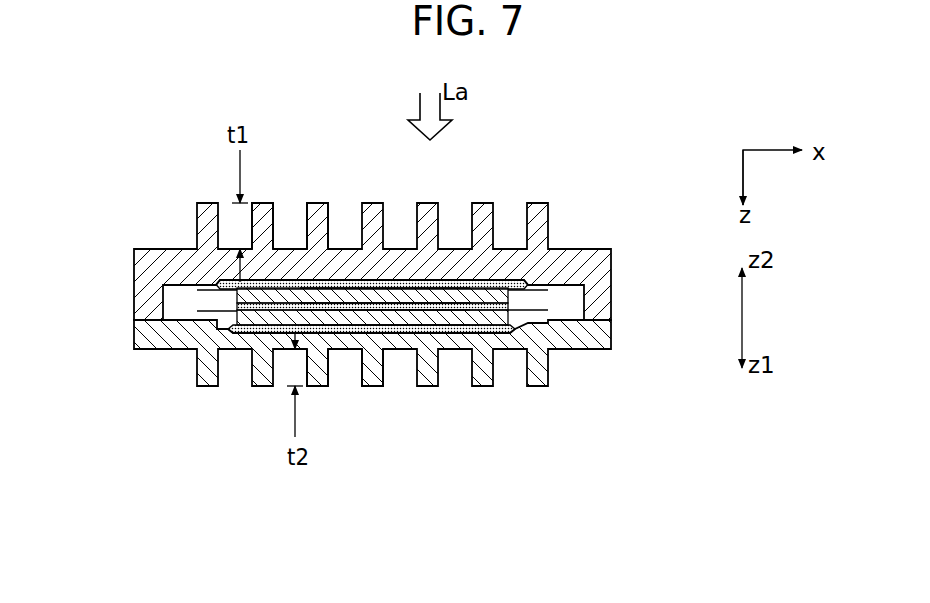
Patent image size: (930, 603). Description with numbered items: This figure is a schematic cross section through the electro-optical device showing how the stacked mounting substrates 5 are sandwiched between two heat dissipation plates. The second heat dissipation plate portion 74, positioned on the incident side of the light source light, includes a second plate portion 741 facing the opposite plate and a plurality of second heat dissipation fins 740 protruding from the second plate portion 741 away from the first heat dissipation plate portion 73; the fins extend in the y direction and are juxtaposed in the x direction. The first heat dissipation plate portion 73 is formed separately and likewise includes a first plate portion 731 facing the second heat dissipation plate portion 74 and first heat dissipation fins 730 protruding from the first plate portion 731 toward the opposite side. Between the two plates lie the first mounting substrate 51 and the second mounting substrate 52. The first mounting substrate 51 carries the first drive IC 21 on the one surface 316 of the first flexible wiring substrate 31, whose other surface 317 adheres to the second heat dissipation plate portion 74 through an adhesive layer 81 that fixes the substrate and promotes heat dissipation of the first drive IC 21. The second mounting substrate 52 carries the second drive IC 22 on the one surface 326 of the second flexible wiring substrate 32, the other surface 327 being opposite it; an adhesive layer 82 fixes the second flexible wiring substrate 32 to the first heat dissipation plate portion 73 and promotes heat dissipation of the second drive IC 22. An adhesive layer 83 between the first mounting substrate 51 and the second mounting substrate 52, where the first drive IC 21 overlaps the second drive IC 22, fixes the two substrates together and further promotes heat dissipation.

The second heat dissipation plate portion 74 is at (610, 246).
The first heat dissipation plate portion 73 is at (611, 352).
The second heat dissipation fins 740 is at (320, 203).
The second plate portion 741 is at (458, 248).
The first heat dissipation fins 730 is at (370, 387).
The first plate portion 731 is at (459, 350).
The first drive IC 21 is at (350, 297).
The second drive IC 22 is at (383, 318).
The other surface of the first flexible wiring substrate 317 is at (442, 289).
The other surface of the second flexible wiring substrate 327 is at (337, 303).
The one surface of the first flexible wiring substrate 316 is at (456, 325).
The one surface of the second flexible wiring substrate 326 is at (265, 326).
The adhesive layer 81 is at (504, 280).
The adhesive layer 82 is at (505, 331).
The adhesive layer 83 is at (255, 307).
The first flexible wiring substrate 31 is at (208, 288).
The second flexible wiring substrate 32 is at (208, 313).
The mounting substrate 5 is at (559, 300).
The first mounting substrate 51 is at (546, 285).
The second mounting substrate 52 is at (543, 313).